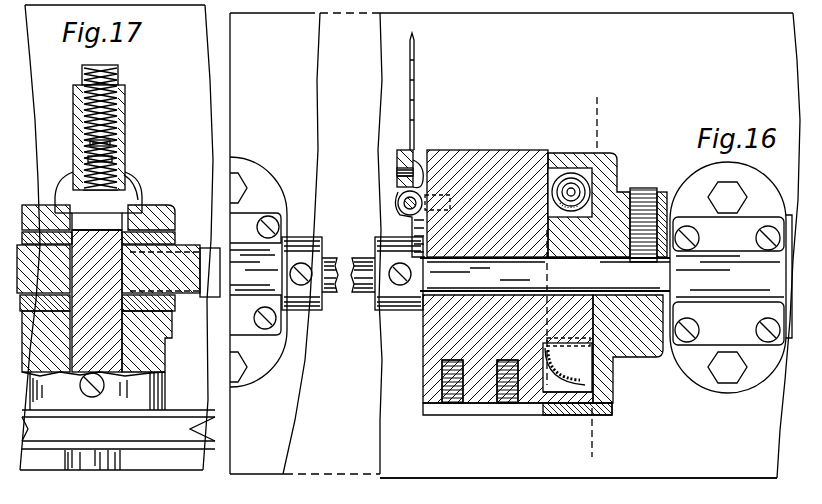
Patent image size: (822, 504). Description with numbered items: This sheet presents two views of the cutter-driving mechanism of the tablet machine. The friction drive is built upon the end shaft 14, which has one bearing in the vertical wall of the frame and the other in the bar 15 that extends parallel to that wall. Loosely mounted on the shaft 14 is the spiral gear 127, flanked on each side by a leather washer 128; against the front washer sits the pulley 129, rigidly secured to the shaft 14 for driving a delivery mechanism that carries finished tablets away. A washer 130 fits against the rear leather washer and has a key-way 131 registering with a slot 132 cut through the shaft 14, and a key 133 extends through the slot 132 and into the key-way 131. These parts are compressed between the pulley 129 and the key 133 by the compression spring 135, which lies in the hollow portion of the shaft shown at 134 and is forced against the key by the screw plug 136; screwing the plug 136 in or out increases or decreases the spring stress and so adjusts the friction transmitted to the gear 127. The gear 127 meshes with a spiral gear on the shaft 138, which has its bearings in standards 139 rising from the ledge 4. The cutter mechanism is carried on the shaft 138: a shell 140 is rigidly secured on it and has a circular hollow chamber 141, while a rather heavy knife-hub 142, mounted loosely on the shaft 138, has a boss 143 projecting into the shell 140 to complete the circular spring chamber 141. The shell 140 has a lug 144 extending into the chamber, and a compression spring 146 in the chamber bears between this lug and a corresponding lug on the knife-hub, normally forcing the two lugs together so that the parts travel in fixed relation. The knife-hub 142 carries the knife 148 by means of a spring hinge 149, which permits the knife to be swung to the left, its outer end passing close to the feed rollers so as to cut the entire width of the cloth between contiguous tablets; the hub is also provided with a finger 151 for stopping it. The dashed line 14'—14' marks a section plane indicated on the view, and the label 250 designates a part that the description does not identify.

In FIG. 17, the ledge 4 is at (116, 237).
In FIG. 16, the ledge 4 is at (515, 245).
In FIG. 17, the end shaft 14 is at (92, 473).
In FIG. 16, the section line 14' is at (577, 276).
In FIG. 16, the bar 15 is at (701, 472).
In FIG. 17, the spiral gear 127 is at (172, 300).
In FIG. 17, the leather washer 128 is at (165, 241).
In FIG. 17, the pulley 129 is at (193, 405).
In FIG. 17, the washer 130 is at (170, 212).
In FIG. 17, the key-way 131 is at (120, 213).
In FIG. 17, the slot 132 is at (100, 222).
In FIG. 17, the key 133 is at (132, 173).
In FIG. 17, the hollow portion of the shaft 134 is at (95, 143).
In FIG. 17, the compression spring 135 is at (95, 160).
In FIG. 17, the screw plug 136 is at (118, 79).
In FIG. 16, the shaft 138 is at (422, 320).
In FIG. 16, the standards 139 is at (250, 374).
In FIG. 16, the shell 140 is at (618, 381).
In FIG. 16, the circular spring chamber 141 is at (594, 170).
In FIG. 16, the knife-hub 142 is at (518, 146).
In FIG. 16, the boss 143 is at (545, 274).
In FIG. 16, the lug 144 is at (612, 393).
In FIG. 16, the compression spring 146 is at (590, 185).
In FIG. 16, the knife 148 is at (432, 91).
In FIG. 16, the spring hinge 149 is at (398, 207).
In FIG. 16, the finger 151 is at (552, 410).
In FIG. 16, the clamp block 250 is at (378, 253).